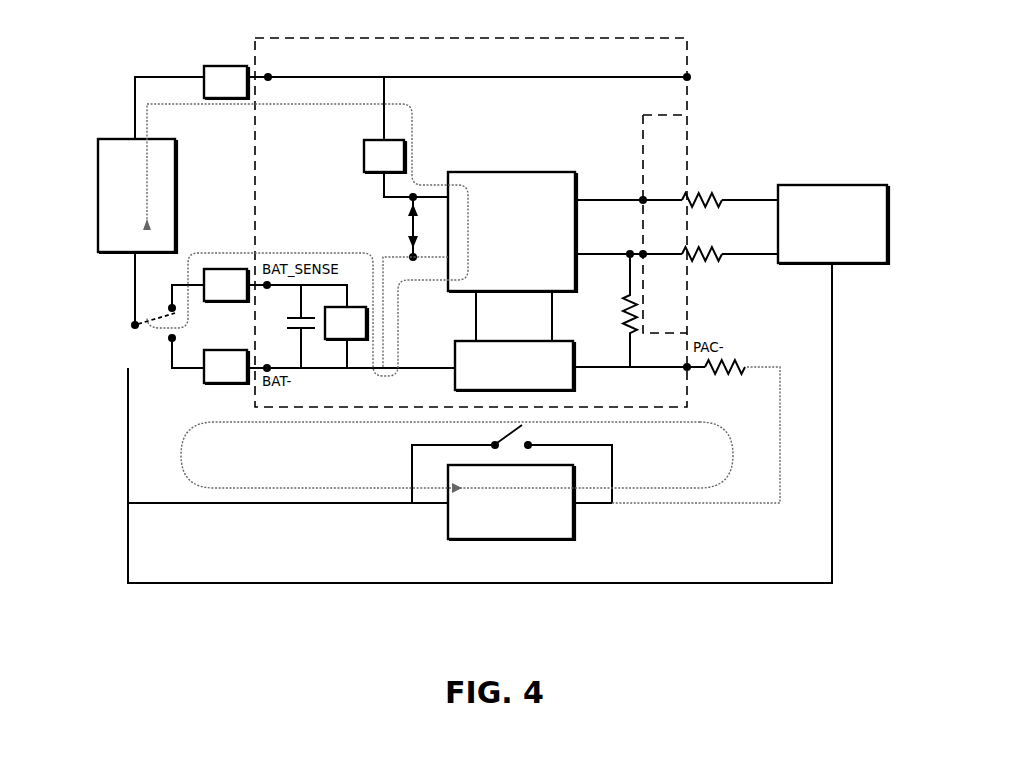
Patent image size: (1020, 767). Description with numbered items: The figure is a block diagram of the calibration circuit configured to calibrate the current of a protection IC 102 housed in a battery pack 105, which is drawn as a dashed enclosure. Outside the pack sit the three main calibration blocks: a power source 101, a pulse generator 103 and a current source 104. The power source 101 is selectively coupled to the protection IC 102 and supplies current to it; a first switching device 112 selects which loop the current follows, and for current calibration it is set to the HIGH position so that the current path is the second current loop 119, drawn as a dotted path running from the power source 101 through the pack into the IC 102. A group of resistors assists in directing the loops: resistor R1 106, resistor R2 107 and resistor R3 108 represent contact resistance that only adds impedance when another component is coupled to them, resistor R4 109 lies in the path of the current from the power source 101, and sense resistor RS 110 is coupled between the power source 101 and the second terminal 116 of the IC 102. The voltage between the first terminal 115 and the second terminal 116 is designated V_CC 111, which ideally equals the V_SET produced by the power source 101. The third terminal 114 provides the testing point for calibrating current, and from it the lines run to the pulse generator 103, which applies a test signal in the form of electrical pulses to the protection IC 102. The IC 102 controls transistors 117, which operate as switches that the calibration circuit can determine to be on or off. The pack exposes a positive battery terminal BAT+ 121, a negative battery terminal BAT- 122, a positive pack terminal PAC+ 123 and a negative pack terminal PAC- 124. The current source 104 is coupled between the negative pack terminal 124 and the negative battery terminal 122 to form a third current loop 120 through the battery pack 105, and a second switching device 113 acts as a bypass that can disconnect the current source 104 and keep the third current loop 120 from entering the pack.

The power source 101 is at (98, 193).
The protection IC 102 is at (525, 172).
The pulse generator 103 is at (888, 232).
The current source 104 is at (505, 540).
The battery pack 105 is at (462, 38).
The resistor R1 106 is at (225, 66).
The resistor R2 107 is at (230, 302).
The resistor R3 108 is at (225, 384).
The resistor R4 109 is at (364, 156).
The sense resistor RS 110 is at (355, 340).
The V_CC 111 is at (405, 215).
The first switching device 112 is at (134, 344).
The second switching device 113 is at (542, 428).
The third terminal 114 is at (630, 254).
The first terminal 115 is at (413, 197).
The second terminal 116 is at (415, 260).
The transistors 117 is at (576, 385).
The second current loop 119 is at (400, 101).
The third current loop 120 is at (662, 490).
The positive battery terminal (BAT+) 121 is at (270, 80).
The negative battery terminal (BAT-) 122 is at (268, 365).
The positive battery pack terminal (PAC+) 123 is at (694, 62).
The negative battery pack terminal (PAC-) 124 is at (690, 370).